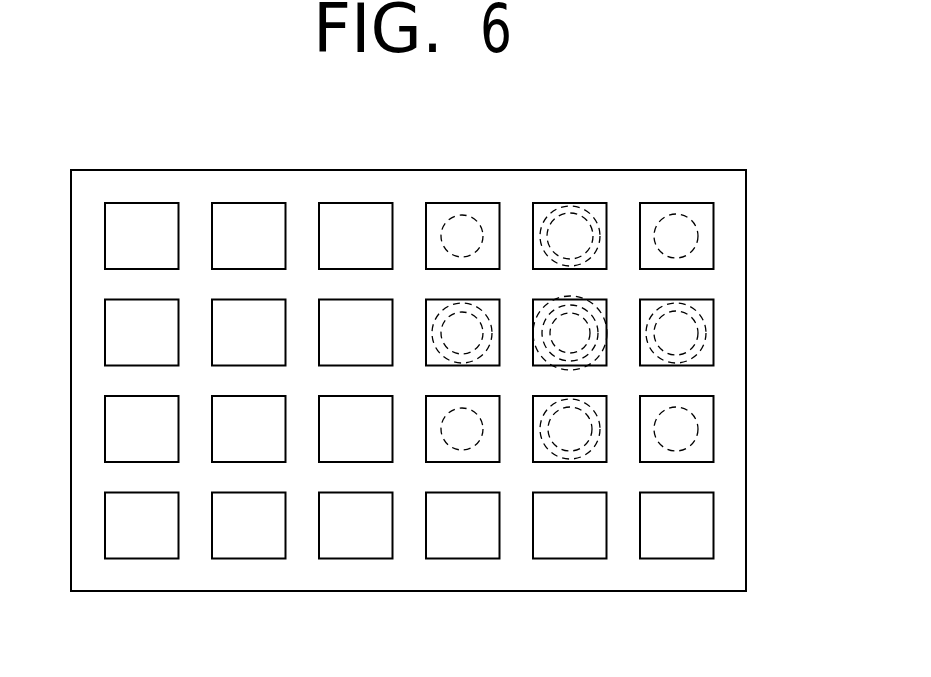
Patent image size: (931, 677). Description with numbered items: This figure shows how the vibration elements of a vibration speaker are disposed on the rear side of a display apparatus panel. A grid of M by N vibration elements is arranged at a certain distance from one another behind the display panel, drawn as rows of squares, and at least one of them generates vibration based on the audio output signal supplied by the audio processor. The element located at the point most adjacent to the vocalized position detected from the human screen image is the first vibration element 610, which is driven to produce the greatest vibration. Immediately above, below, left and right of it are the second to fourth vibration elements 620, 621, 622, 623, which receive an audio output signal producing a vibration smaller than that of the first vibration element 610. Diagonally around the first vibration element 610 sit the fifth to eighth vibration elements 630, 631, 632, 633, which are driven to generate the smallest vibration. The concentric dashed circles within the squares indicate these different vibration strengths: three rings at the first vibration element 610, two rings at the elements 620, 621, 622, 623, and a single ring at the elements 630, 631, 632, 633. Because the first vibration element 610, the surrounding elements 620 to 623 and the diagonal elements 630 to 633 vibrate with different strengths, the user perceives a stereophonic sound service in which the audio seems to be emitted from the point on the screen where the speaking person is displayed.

The first vibration element 610 is at (533, 330).
The second vibration element 620 is at (570, 202).
The third vibration element 621 is at (425, 330).
The fourth vibration element 622 is at (533, 443).
The fourth vibration element 623 is at (713, 330).
The fifth vibration element 630 is at (463, 202).
The sixth vibration element 631 is at (425, 443).
The seventh vibration element 632 is at (713, 428).
The eighth vibration element 633 is at (677, 202).